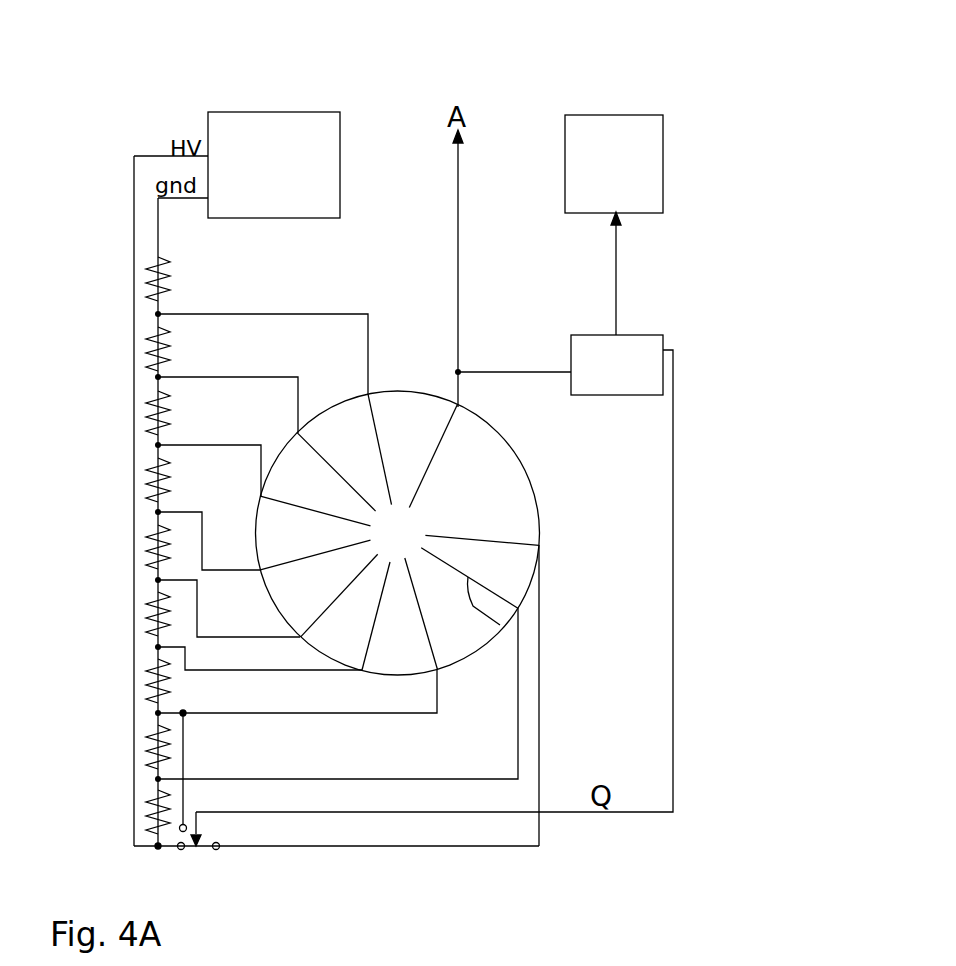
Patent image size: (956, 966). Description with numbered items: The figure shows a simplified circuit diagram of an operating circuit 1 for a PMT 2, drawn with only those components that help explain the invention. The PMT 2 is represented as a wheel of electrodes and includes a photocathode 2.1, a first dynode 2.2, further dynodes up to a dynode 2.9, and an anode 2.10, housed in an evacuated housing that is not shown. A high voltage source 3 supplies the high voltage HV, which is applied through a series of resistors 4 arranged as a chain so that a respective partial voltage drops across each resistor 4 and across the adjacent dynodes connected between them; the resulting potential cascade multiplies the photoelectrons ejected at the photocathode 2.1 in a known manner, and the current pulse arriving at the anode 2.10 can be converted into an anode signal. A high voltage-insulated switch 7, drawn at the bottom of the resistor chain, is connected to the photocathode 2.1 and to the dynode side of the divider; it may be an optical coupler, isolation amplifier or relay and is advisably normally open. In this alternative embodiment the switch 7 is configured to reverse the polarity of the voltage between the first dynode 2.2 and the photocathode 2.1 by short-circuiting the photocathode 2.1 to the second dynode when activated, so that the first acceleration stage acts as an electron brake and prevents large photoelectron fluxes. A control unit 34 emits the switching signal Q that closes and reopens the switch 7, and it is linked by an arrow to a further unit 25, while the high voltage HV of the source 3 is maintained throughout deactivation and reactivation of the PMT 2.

The operating circuit 1 is at (616, 52).
The PMT 2 is at (453, 353).
The photocathode 2.1 is at (503, 542).
The first dynode 2.2 is at (500, 625).
The dynode 2.9 is at (373, 422).
The anode 2.10 is at (443, 440).
The high voltage source 3 is at (256, 140).
The resistors 4 is at (150, 281).
The high voltage-insulated switch 7 is at (197, 850).
The control unit 25 is at (663, 157).
The control unit 34 is at (650, 335).